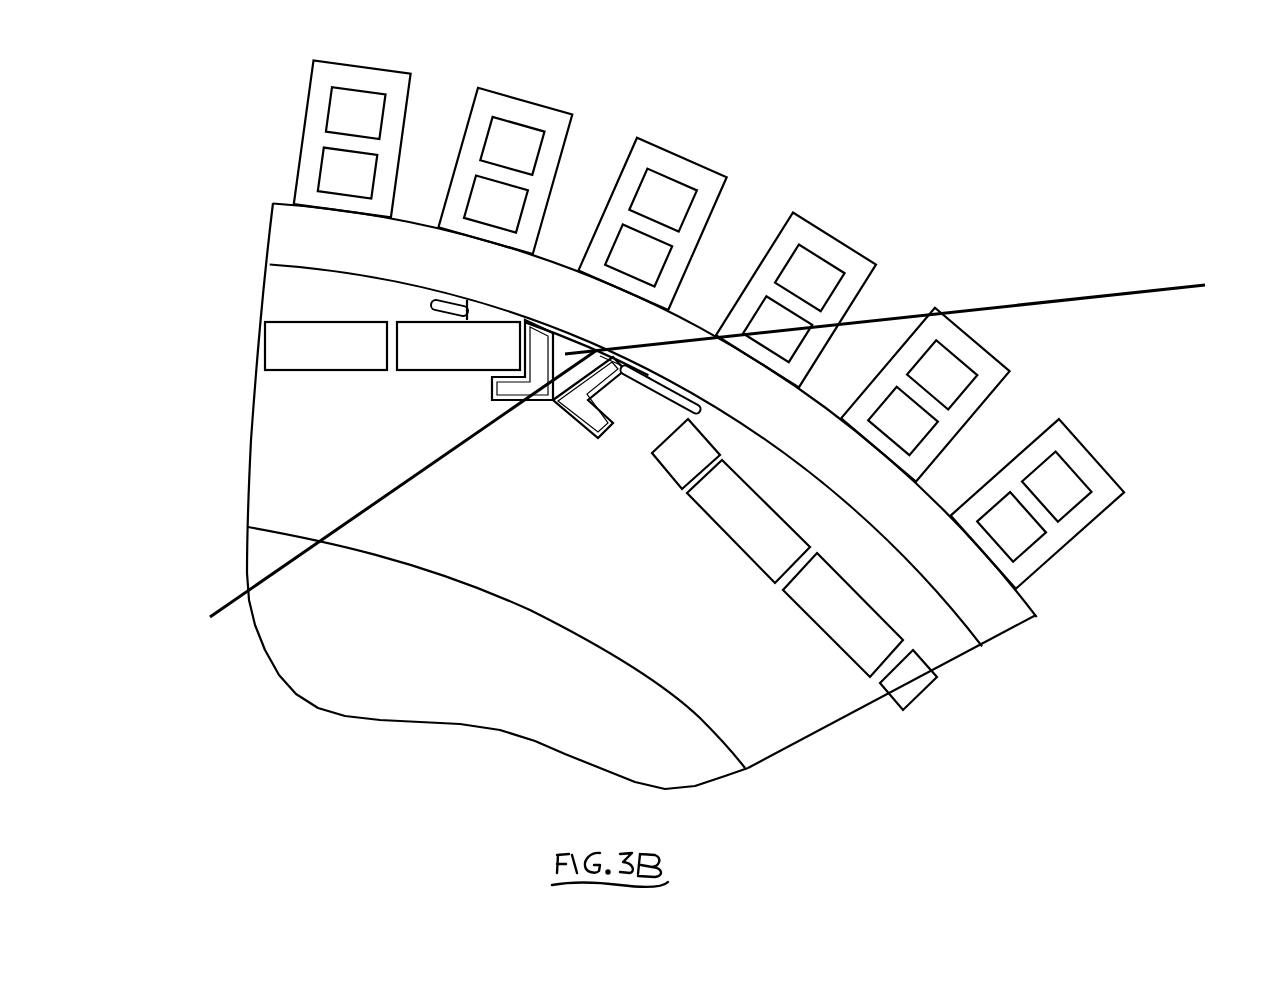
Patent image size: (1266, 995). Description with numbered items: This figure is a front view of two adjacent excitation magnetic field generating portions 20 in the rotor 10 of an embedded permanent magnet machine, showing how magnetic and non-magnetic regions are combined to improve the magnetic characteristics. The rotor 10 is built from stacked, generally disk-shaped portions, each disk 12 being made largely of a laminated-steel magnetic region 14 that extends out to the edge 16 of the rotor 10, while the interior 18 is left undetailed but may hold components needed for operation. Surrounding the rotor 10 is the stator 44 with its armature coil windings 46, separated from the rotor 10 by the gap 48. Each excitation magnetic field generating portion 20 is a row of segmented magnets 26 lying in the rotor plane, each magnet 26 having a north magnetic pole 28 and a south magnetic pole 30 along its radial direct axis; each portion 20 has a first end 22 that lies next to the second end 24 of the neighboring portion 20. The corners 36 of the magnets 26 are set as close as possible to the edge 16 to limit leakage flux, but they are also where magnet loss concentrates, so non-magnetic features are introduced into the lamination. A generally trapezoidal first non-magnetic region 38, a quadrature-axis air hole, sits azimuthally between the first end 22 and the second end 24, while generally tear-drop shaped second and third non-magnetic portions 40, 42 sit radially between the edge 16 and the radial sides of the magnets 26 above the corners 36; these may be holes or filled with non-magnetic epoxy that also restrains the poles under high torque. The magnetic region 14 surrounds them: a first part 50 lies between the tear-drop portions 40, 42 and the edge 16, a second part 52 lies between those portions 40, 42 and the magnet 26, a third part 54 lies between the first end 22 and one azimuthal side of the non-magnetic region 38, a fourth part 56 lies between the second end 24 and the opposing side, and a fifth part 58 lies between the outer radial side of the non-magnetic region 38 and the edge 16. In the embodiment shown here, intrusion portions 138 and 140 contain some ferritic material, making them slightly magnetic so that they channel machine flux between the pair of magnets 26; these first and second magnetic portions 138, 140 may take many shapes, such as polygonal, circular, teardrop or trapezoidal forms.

The rotor 10 is at (499, 278).
The disk 12 is at (709, 324).
The magnetic region 14 is at (638, 616).
The edge 16 is at (327, 263).
The interior 18 is at (430, 652).
The excitation magnetic field generating portion 20 is at (371, 298).
The first end 22 is at (524, 393).
The second end 24 is at (592, 412).
The segmented magnet 26 is at (437, 372).
The north magnetic pole 28 is at (847, 655).
The south magnetic pole 30 is at (890, 628).
The corner 36 is at (523, 317).
The first non-magnetic region 38 is at (553, 407).
The second non-magnetic portion 40 is at (427, 338).
The third non-magnetic portion 42 is at (648, 410).
The stator 44 is at (978, 205).
The armature coil windings 46 is at (808, 267).
The gap 48 is at (822, 461).
The first part of the magnetic region 50 is at (447, 294).
The second part of the magnetic region 52 is at (469, 317).
The third part of the magnetic region 54 is at (520, 347).
The fourth part of the magnetic region 56 is at (647, 375).
The fifth part of the magnetic region 58 is at (597, 355).
The intrusion portion 138 is at (913, 315).
The intrusion portion 140 is at (381, 502).